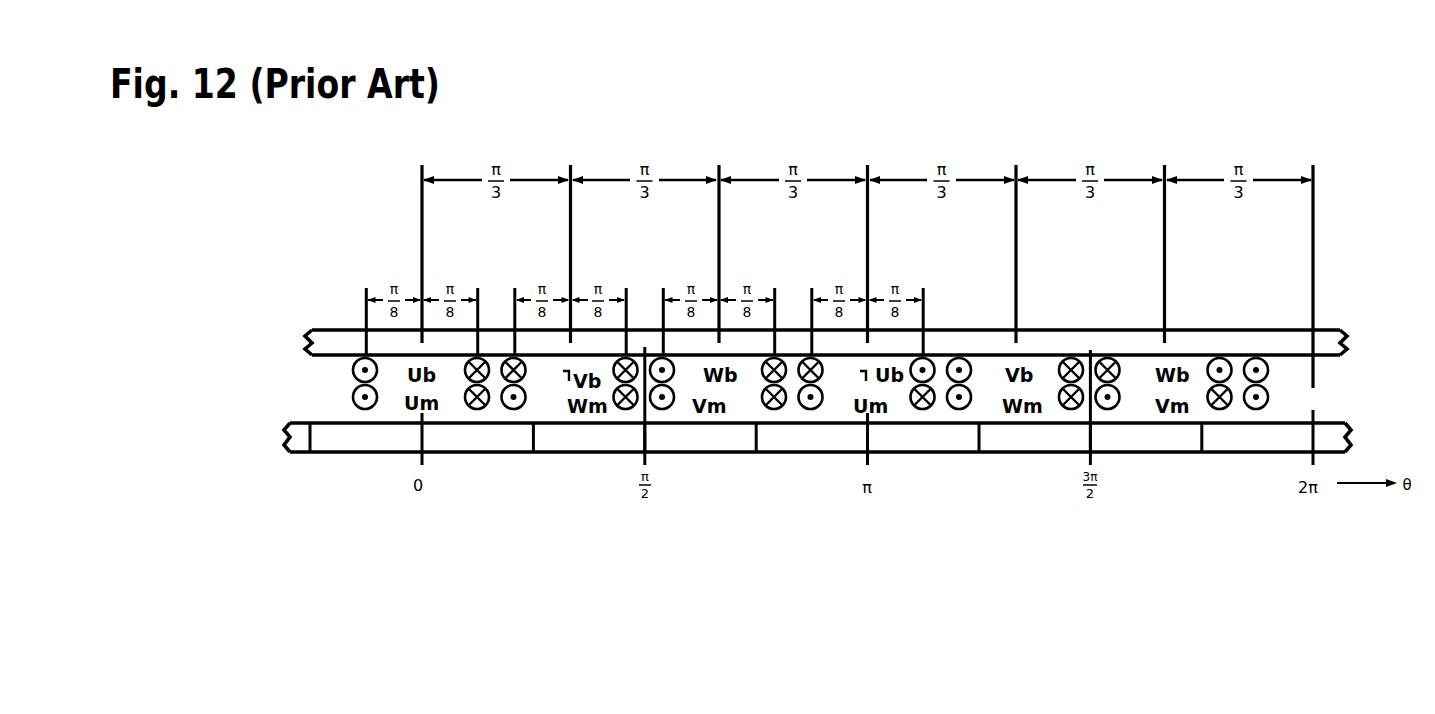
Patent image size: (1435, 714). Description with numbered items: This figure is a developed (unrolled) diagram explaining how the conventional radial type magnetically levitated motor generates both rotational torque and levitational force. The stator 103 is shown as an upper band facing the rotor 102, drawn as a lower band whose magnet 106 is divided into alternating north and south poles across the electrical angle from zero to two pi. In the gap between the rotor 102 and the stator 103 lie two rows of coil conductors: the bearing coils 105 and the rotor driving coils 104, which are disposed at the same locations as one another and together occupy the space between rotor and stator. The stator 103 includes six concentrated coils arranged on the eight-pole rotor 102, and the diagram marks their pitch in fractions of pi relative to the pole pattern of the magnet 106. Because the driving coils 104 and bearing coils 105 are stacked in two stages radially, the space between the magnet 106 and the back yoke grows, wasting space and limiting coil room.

The rotor 102 is at (1222, 478).
The stator 103 is at (1240, 322).
The rotor driving coils 104 is at (350, 397).
The bearing coils 105 is at (350, 370).
The magnet 106 is at (470, 461).